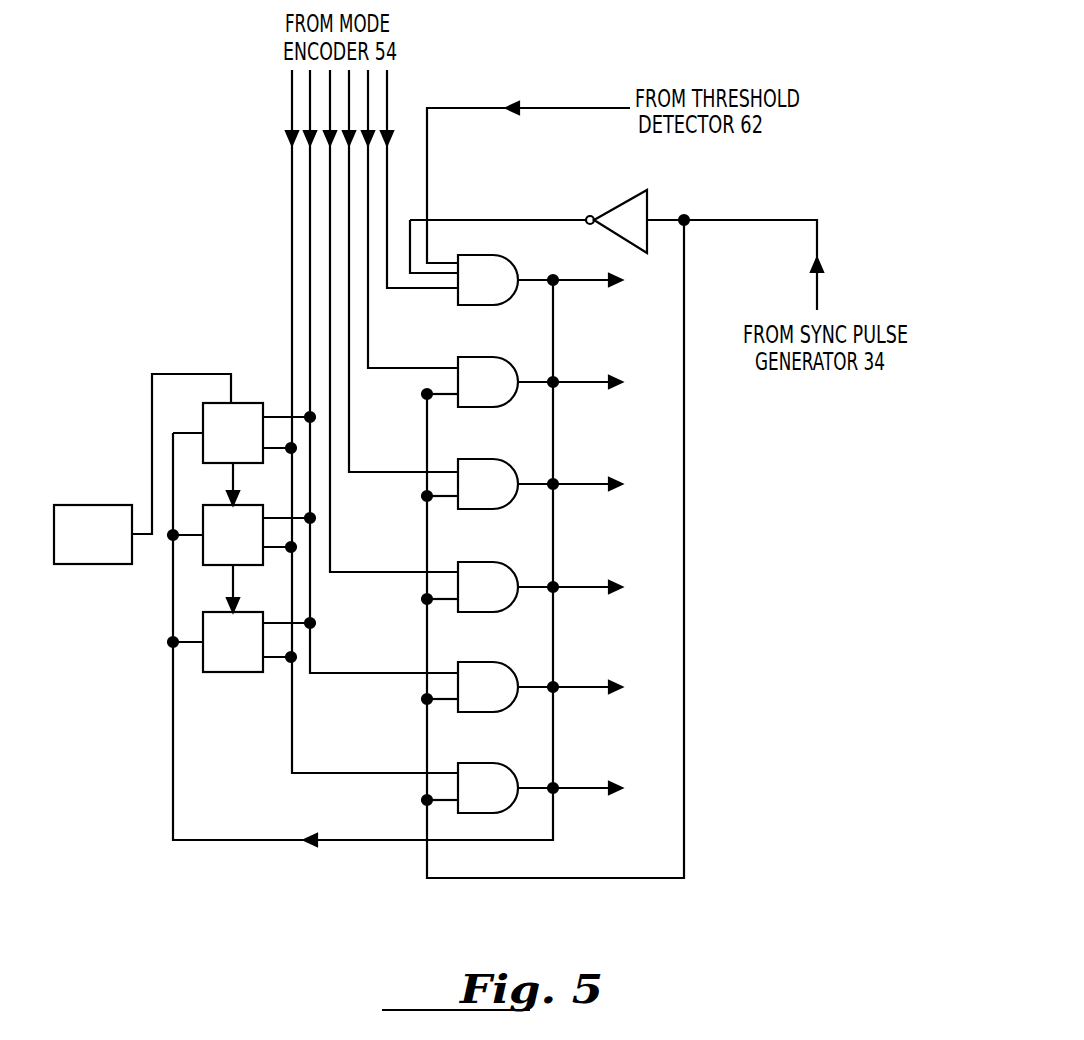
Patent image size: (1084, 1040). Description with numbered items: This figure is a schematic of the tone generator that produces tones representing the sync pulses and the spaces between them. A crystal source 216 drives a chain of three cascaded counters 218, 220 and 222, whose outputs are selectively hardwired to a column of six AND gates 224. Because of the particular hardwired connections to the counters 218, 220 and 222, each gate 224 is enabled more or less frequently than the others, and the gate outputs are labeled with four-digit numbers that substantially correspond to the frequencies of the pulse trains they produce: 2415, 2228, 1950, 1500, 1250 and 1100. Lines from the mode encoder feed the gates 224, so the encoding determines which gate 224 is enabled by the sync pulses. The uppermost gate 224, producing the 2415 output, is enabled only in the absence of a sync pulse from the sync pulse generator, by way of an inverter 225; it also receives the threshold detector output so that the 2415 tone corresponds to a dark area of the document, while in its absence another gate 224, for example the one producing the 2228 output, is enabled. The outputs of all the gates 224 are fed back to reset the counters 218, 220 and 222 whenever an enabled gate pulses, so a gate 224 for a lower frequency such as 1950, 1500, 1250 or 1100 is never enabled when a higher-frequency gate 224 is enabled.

The crystal source 216 is at (85, 505).
The counter 218 is at (208, 412).
The counter 220 is at (213, 558).
The counter 222 is at (215, 660).
The AND gate 224 is at (486, 265).
The inverter 225 is at (620, 208).
The 2415 Hz output 2415 is at (591, 283).
The 2228 Hz output 2228 is at (590, 385).
The 1950 Hz output 1950 is at (585, 488).
The 1500 Hz output 1500 is at (588, 590).
The 1250 Hz output 1250 is at (592, 688).
The 1100 Hz output 1100 is at (590, 790).